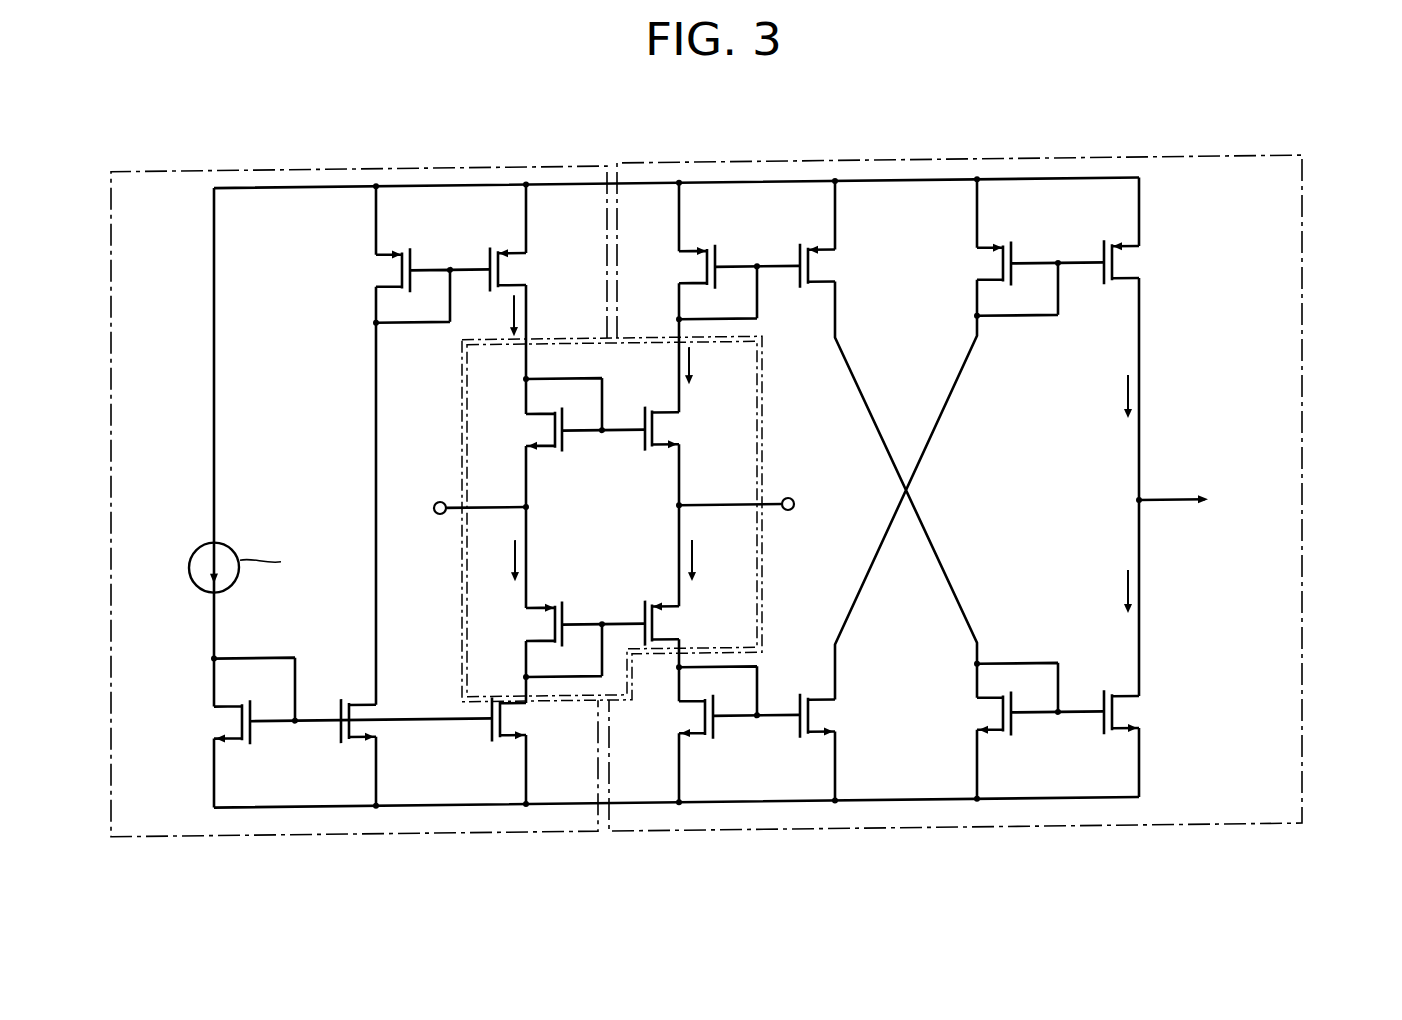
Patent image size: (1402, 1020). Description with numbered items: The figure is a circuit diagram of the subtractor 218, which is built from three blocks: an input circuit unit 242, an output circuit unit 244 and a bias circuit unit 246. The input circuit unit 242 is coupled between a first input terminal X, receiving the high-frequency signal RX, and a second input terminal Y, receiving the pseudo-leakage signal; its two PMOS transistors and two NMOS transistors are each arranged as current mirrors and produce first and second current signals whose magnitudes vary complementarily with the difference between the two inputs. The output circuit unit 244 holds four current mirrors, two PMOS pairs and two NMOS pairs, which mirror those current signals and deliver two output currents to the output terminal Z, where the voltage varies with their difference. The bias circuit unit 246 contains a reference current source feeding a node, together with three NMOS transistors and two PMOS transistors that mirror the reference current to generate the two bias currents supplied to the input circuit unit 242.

The subtractor 218 is at (706, 128).
The input circuit unit 242 is at (762, 431).
The output circuit unit 244 is at (1302, 290).
The bias circuit unit 246 is at (111, 296).